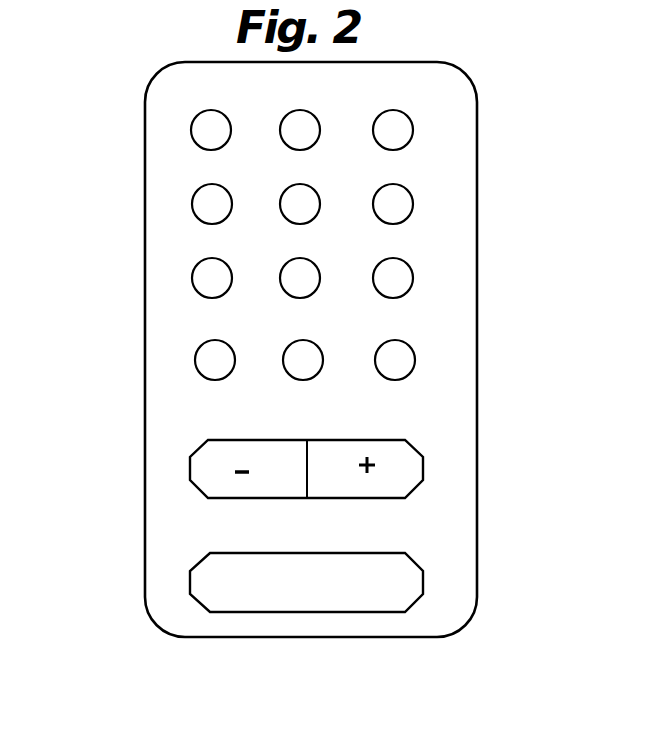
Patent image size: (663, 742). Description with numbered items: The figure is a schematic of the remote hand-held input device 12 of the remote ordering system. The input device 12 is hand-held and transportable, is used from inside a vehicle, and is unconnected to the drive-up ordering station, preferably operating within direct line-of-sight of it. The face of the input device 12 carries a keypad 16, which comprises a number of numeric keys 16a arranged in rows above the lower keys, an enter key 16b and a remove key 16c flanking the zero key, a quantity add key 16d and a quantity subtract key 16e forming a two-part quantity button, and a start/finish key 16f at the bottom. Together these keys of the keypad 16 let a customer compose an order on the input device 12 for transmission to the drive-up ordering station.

The input device 12 is at (489, 160).
The keypad 16 is at (470, 312).
The numeric keys 16a is at (206, 130).
The enter key 16b is at (205, 366).
The remove key 16c is at (407, 362).
The quantity add key 16d is at (405, 478).
The quantity subtract key 16e is at (205, 467).
The start/finish key 16f is at (408, 588).